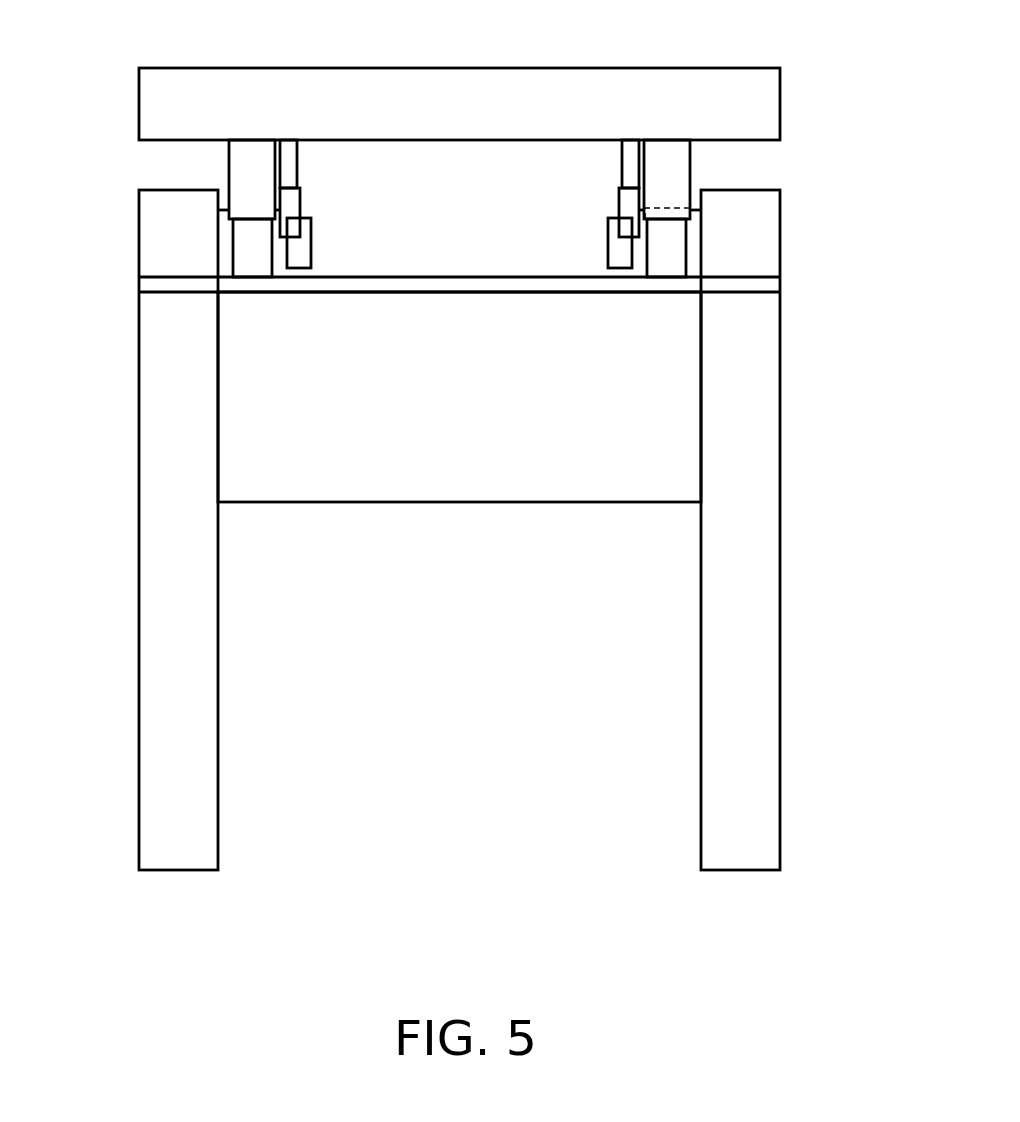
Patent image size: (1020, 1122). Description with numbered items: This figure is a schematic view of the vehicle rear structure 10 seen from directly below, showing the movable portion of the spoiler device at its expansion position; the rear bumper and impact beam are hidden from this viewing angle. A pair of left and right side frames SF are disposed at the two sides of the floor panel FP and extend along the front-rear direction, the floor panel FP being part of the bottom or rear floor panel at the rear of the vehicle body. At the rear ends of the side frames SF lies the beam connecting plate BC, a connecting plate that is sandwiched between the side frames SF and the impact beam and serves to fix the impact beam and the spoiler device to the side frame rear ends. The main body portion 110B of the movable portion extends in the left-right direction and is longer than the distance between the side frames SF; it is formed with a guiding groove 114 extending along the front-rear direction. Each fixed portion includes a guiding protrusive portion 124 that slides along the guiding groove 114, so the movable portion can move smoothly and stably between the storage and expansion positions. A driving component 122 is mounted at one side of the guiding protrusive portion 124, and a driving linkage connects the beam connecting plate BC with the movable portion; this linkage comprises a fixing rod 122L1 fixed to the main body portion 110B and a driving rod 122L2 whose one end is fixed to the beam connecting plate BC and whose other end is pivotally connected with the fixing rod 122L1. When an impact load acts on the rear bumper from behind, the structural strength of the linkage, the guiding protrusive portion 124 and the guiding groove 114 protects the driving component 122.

The main body portion 110B is at (748, 105).
The guiding groove 114 is at (672, 165).
The guiding protrusive portion 124 is at (690, 214).
The driving component 122 is at (621, 246).
The fixing rod 122L1 is at (629, 158).
The driving rod 122L2 is at (628, 205).
The beam connecting plate BC is at (748, 286).
The side frame SF is at (172, 392).
The floor panel FP is at (658, 479).
The vehicle rear structure 10 is at (886, 933).